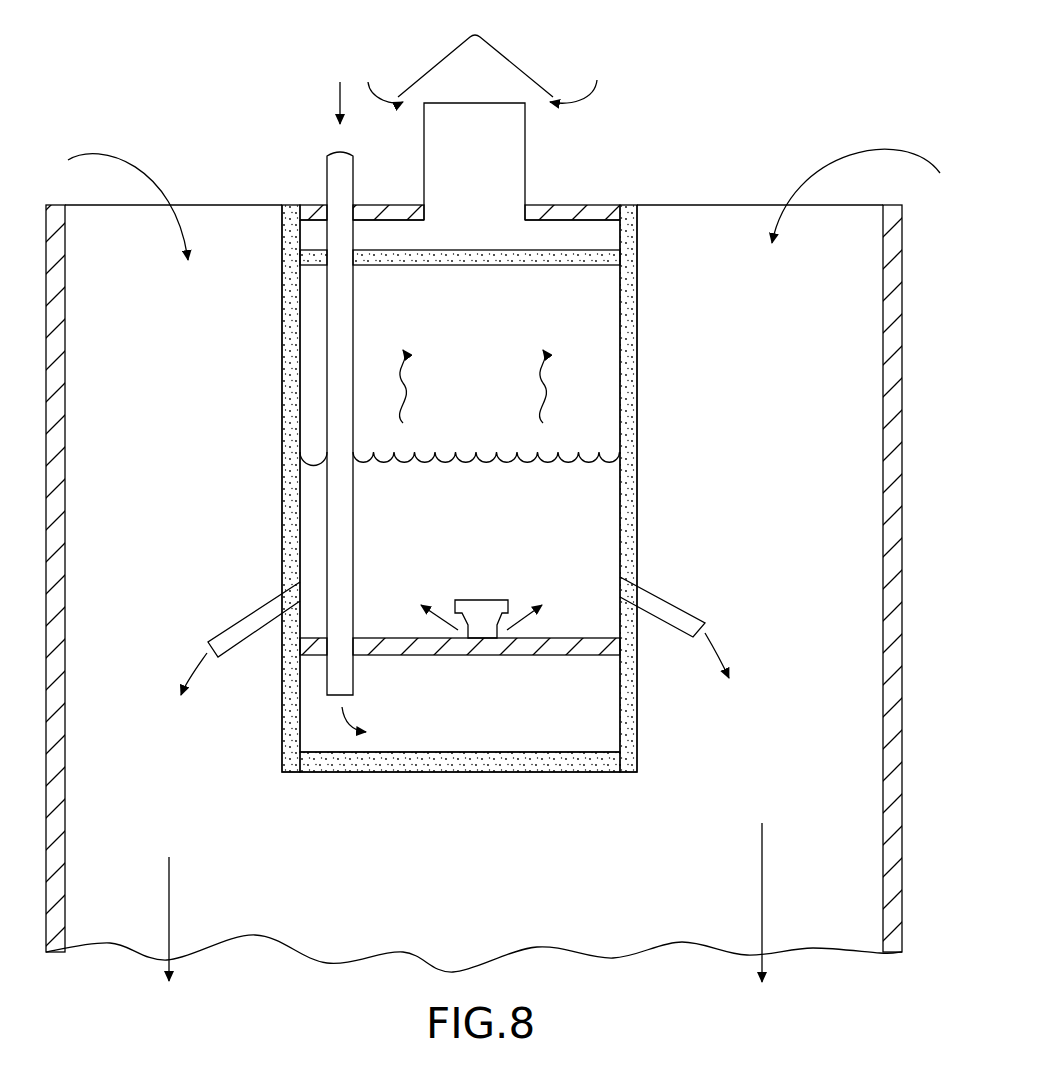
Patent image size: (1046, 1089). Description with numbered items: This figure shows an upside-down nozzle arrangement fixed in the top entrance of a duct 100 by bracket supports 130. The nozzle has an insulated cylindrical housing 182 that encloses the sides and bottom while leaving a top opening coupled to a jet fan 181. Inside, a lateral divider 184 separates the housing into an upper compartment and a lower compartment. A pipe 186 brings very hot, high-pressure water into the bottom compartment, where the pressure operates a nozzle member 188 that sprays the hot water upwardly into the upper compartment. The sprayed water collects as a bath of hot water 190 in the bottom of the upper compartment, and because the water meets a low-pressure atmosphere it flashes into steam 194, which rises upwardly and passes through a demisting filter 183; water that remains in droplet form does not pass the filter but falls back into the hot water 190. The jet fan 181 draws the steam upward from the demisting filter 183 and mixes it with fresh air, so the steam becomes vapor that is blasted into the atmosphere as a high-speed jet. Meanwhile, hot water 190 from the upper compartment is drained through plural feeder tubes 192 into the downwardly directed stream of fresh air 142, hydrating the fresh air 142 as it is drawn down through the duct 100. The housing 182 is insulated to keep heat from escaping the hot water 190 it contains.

The duct 100 is at (900, 603).
The bracket supports 130 is at (217, 205).
The fresh air 142 is at (502, 204).
The jet fan 181 is at (525, 180).
The insulated cylindrical housing 182 is at (637, 428).
The demisting filter 183 is at (517, 267).
The lateral divider 184 is at (553, 655).
The pipe 186 is at (353, 298).
The nozzle member 188 is at (475, 600).
The hot water 190 is at (433, 473).
The feeder tubes 192 is at (253, 608).
The steam 194 is at (400, 387).